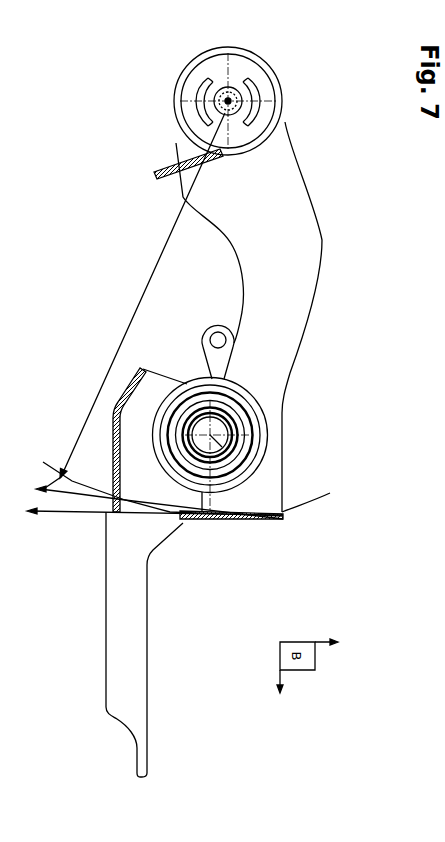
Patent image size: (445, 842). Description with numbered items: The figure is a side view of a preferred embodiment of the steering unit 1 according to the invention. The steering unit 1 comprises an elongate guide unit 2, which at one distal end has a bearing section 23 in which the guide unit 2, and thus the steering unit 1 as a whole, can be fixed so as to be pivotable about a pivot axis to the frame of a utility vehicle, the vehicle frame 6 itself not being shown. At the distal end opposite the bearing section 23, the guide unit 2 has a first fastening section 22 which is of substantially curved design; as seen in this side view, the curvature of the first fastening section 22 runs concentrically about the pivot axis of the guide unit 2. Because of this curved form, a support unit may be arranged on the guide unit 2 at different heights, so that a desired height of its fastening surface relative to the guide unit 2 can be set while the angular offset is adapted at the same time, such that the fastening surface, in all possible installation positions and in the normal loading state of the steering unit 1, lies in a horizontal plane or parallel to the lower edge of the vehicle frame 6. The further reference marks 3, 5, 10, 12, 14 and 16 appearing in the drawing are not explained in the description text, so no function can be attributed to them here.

The steering unit 1 is at (340, 306).
The guide unit 2 is at (230, 293).
The arm end bend 3 is at (108, 721).
The pulley wheel 5 is at (215, 104).
The vehicle frame 6 is at (31, 512).
The bracket 10 is at (137, 518).
The bearing disc 12 is at (248, 459).
The lower arm edge 14 is at (123, 632).
The lower arm 16 is at (156, 597).
The first fastening section 22 is at (243, 527).
The bearing section 23 is at (220, 516).